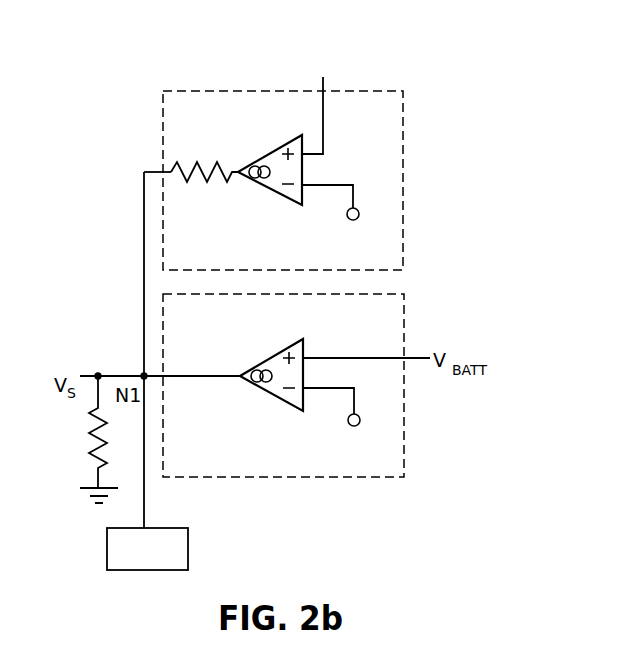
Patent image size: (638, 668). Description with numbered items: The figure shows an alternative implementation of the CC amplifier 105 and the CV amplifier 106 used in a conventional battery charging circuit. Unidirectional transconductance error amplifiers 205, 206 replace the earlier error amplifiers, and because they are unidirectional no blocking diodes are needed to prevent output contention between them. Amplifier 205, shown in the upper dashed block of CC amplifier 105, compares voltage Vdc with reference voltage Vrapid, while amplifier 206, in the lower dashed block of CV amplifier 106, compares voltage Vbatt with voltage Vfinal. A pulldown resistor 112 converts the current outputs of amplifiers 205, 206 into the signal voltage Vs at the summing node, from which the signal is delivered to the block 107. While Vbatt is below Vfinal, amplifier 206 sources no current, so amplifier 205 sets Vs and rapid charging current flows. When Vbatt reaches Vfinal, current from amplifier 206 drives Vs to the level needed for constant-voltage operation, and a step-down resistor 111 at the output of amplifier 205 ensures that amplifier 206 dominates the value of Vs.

The CC amplifier 105 is at (192, 84).
The CV amplifier 106 is at (358, 493).
The control circuit 107 is at (166, 562).
The step-down resistor 111 is at (210, 162).
The pulldown resistor 112 is at (90, 455).
The unidirectional transconductance error amplifier 205 is at (280, 147).
The unidirectional transconductance error amplifier 206 is at (282, 350).